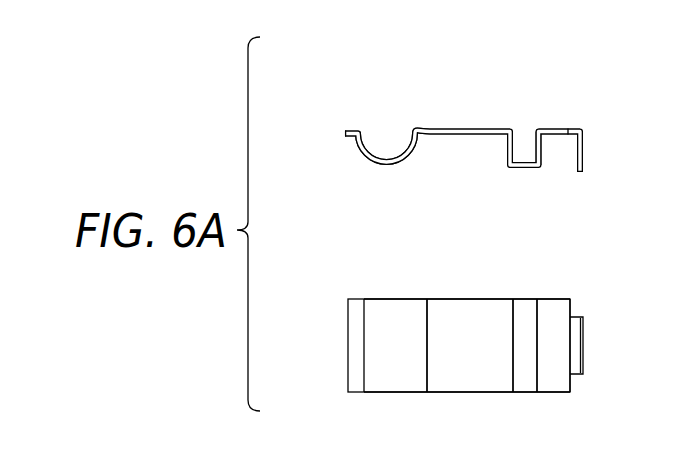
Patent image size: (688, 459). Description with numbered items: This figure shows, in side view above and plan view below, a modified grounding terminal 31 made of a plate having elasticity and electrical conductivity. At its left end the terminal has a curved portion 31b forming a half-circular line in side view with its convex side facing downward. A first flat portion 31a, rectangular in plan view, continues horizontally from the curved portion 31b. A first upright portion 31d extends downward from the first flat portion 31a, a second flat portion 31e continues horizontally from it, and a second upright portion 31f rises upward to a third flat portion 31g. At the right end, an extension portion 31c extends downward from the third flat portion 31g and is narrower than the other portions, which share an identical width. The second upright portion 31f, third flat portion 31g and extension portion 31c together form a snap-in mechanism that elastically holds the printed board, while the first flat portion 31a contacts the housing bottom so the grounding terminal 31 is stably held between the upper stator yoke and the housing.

The grounding terminal 31 is at (333, 106).
The first flat portion 31a is at (472, 127).
The curved portion 31b is at (391, 165).
The extension portion 31c is at (583, 148).
The first upright portion 31d is at (507, 148).
The second flat portion 31e is at (525, 170).
The second upright portion 31f is at (542, 147).
The third flat portion 31g is at (562, 127).